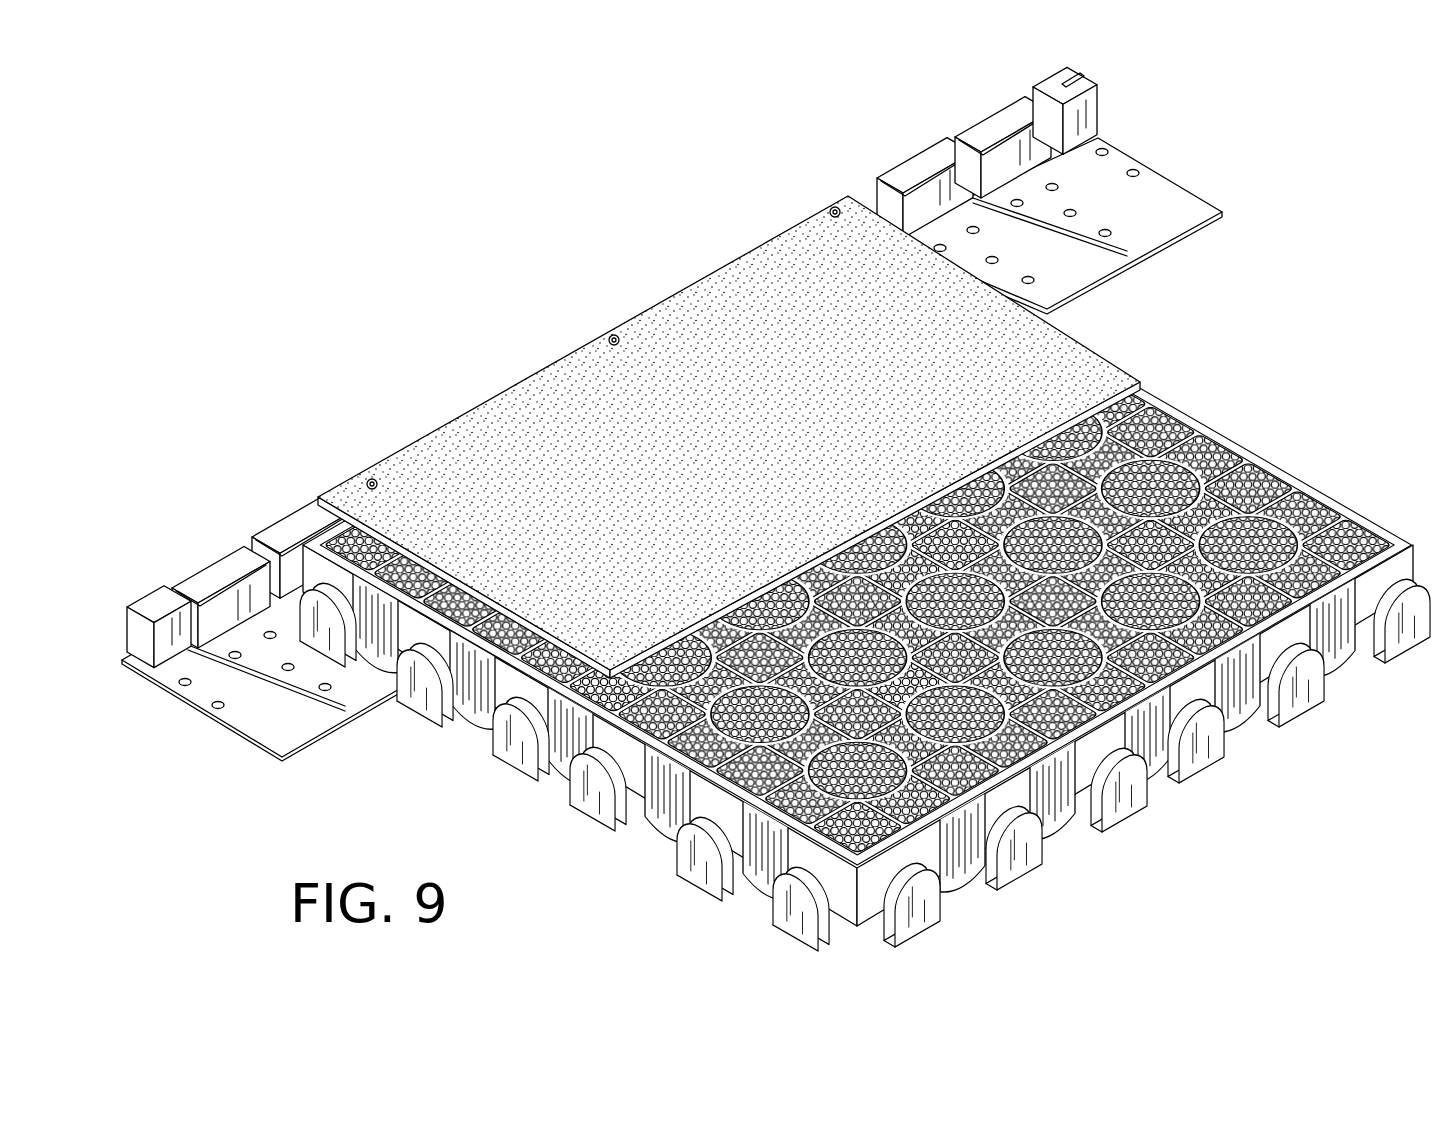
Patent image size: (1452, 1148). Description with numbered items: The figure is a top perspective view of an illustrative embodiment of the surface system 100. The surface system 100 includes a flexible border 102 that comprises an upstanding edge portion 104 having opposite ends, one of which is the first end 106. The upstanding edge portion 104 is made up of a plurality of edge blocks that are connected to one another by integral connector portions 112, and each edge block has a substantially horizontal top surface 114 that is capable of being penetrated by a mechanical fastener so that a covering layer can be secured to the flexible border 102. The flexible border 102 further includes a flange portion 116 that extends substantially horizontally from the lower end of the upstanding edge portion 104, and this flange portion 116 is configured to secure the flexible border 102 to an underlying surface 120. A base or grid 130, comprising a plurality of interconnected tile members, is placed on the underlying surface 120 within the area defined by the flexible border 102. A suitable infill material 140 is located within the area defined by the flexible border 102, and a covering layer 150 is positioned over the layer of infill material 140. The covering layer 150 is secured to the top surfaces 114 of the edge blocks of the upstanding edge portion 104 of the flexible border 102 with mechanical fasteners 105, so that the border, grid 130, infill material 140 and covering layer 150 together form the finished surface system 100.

The surface system 100 is at (874, 554).
The flexible border 102 is at (880, 178).
The upstanding edge portion 104 is at (148, 633).
The mechanical fasteners 105 is at (833, 207).
The first end 106 is at (1083, 82).
The integral connector portions 112 is at (166, 574).
The top surface 114 is at (980, 128).
The flange portion 116 is at (1120, 240).
The underlying surface 120 is at (290, 720).
The grid 130 is at (628, 860).
The infill material 140 is at (1195, 455).
The covering layer 150 is at (520, 432).